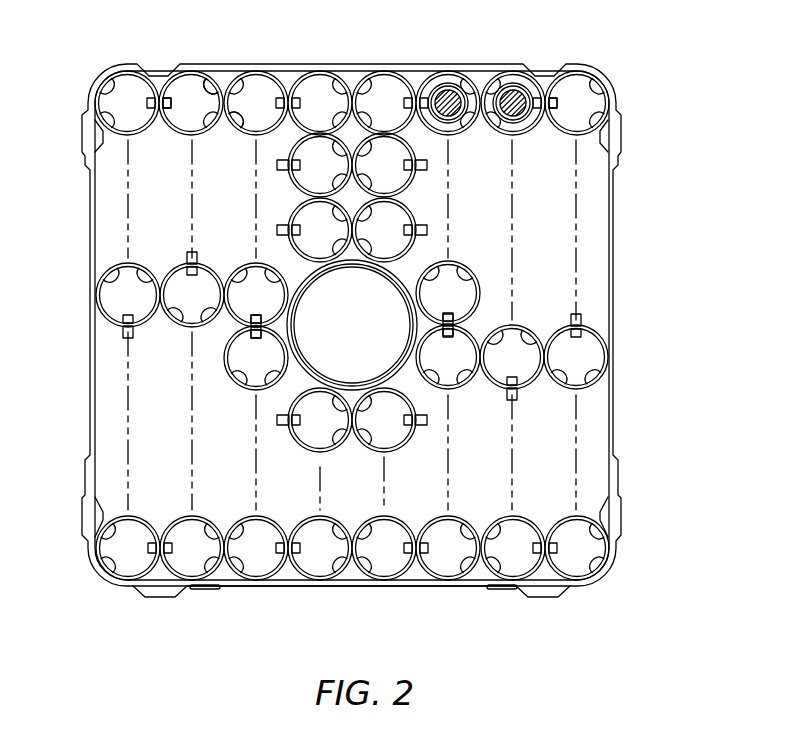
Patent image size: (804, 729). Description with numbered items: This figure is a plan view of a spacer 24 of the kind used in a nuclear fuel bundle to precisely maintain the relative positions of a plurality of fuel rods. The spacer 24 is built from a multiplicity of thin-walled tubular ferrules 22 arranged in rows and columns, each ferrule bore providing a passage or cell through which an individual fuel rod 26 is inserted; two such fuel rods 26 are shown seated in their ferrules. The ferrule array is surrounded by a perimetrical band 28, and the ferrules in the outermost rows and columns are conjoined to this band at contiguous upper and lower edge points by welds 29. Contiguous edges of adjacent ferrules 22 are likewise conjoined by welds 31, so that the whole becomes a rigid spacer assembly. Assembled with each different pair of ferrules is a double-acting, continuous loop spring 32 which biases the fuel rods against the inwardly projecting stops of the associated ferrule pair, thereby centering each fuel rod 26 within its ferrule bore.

The tubular ferrule 22 is at (557, 128).
The spacer 24 is at (630, 344).
The fuel rod 26 is at (456, 84).
The perimetrical band 28 is at (348, 587).
The welds 29 is at (453, 73).
The welds 31 is at (350, 93).
The double-acting continuous loop spring 32 is at (556, 103).